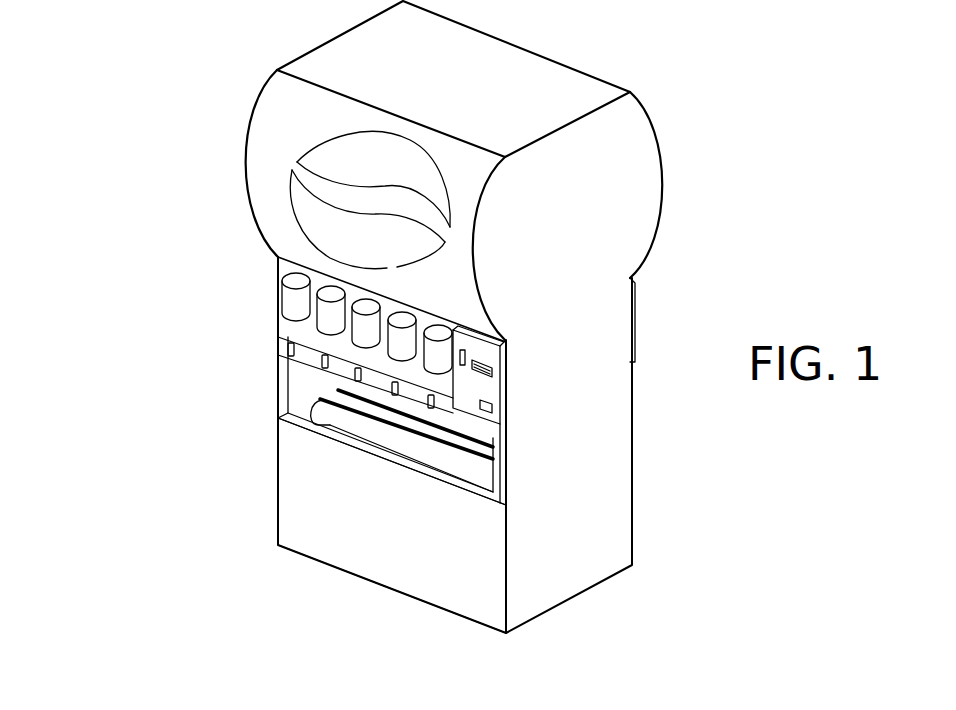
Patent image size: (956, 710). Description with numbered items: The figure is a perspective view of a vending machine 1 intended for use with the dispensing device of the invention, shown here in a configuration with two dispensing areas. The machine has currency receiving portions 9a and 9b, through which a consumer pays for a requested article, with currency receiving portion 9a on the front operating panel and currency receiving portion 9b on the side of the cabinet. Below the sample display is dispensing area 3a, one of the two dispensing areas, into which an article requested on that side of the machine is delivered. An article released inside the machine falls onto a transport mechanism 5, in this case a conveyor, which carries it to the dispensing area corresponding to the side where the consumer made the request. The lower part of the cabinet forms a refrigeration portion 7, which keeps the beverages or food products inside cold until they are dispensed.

The vending machine 1 is at (202, 109).
The dispensing area 3a is at (300, 382).
The transport mechanism 5 is at (387, 432).
The refrigeration portion 7 is at (350, 520).
The currency receiving portion 9a is at (487, 387).
The currency receiving portion 9b is at (635, 290).